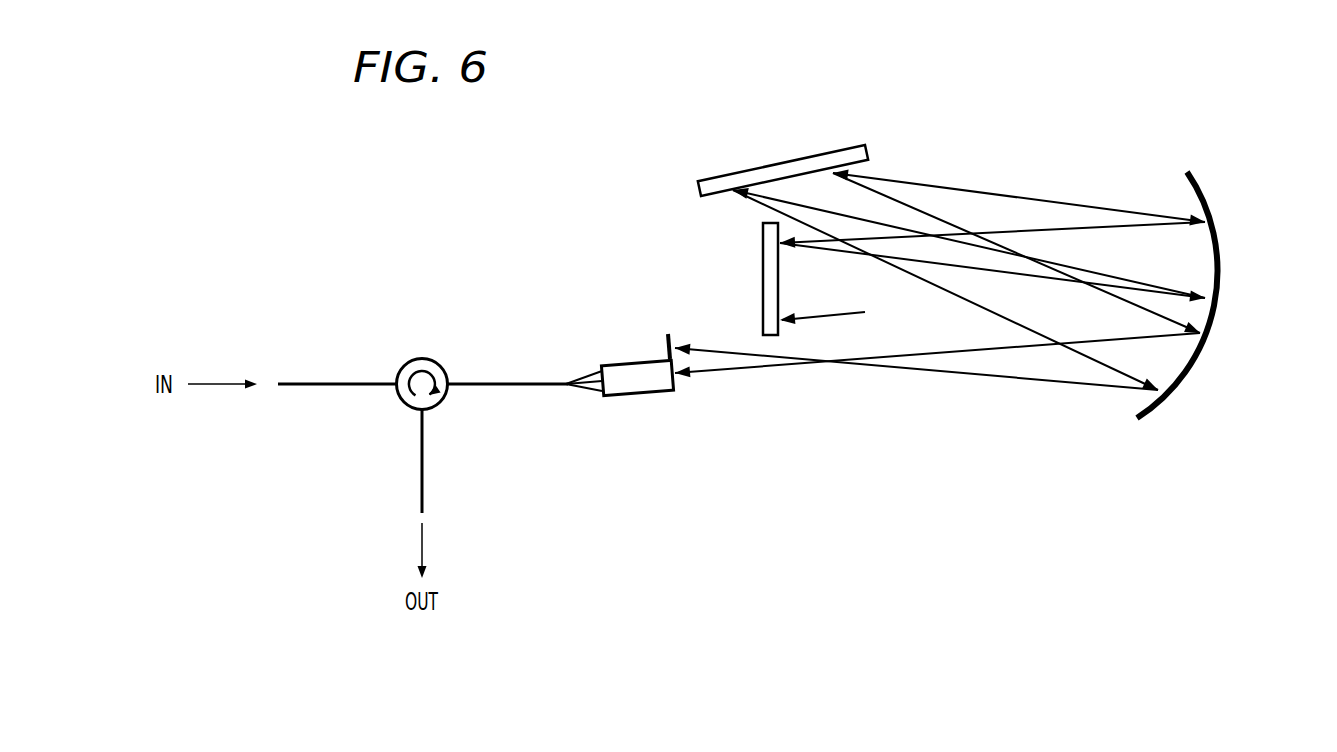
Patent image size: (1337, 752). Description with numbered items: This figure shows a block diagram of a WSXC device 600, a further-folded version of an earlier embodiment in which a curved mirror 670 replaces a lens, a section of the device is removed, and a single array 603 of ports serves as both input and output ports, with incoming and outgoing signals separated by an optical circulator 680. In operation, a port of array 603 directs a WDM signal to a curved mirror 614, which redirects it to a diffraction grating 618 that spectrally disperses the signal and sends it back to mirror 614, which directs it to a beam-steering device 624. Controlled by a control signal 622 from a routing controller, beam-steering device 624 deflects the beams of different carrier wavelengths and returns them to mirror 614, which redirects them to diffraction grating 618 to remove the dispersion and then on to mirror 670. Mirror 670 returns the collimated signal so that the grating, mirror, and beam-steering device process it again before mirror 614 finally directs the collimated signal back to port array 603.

The WSXC device 600 is at (439, 131).
The array of ports 603 is at (632, 396).
The curved mirror 614 is at (1222, 262).
The diffraction grating 618 is at (808, 157).
The control signal 622 is at (815, 315).
The beam-steering device 624 is at (763, 278).
The curved mirror 670 is at (665, 343).
The optical circulator 680 is at (423, 357).